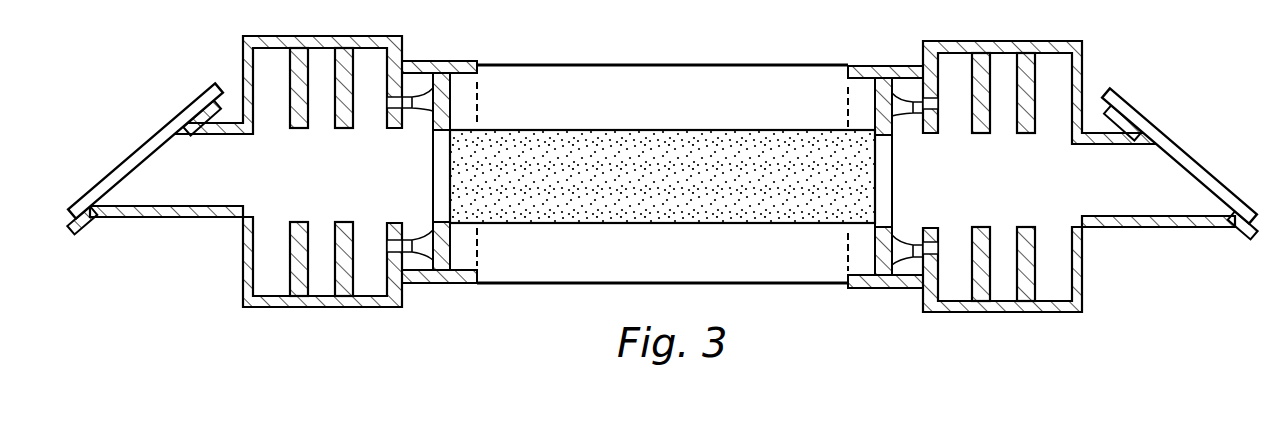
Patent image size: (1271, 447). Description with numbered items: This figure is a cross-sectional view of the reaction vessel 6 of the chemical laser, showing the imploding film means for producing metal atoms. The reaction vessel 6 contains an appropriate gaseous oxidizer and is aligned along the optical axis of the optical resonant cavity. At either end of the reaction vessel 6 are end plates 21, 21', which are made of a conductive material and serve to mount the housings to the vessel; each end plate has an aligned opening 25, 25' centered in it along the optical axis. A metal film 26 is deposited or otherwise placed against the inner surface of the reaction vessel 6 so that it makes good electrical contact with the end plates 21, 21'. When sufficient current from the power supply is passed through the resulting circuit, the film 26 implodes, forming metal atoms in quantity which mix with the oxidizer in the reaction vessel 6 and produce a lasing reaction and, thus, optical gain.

The reaction vessel 6 is at (549, 129).
The end plate 21 is at (463, 172).
The end plate 21' is at (850, 177).
The opening 25 is at (250, 171).
The opening 25' is at (1076, 176).
The metal film 26 is at (622, 204).